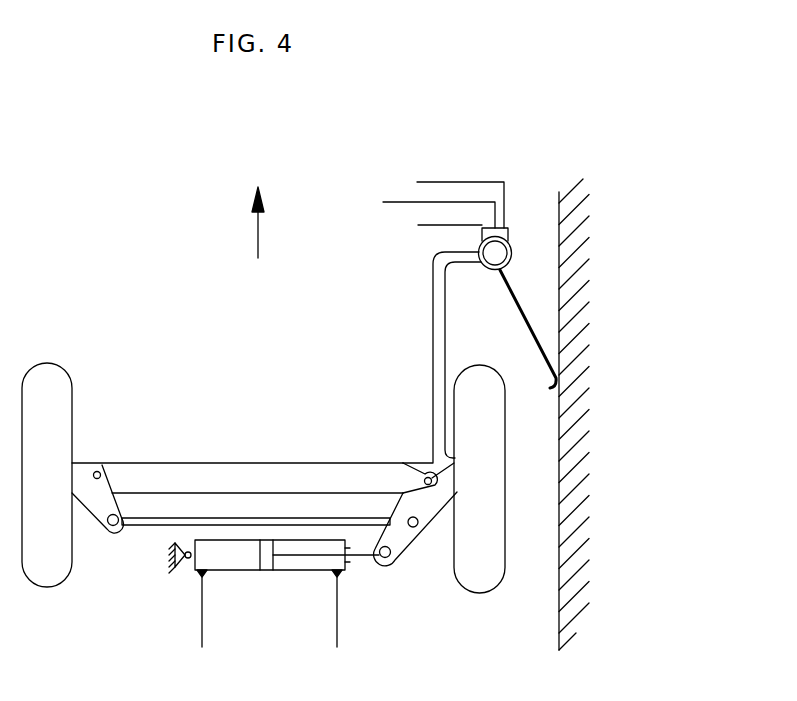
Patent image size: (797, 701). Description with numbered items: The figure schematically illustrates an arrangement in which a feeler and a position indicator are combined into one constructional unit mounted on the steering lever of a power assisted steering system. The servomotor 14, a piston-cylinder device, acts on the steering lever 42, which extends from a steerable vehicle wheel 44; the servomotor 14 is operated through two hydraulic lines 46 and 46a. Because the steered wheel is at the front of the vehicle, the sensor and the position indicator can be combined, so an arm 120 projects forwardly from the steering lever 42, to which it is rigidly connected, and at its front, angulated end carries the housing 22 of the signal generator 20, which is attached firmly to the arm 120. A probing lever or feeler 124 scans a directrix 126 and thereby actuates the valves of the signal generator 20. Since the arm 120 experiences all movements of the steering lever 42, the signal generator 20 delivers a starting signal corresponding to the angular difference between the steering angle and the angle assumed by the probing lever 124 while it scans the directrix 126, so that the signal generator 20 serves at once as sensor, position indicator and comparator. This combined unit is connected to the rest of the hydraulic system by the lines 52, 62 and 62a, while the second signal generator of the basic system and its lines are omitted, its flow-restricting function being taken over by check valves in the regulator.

The servomotor 14 is at (217, 557).
The signal generator 20 is at (495, 253).
The housing 22 is at (507, 230).
The steering lever 42 is at (396, 540).
The steerable vehicle wheel 44 is at (490, 562).
The hydraulic line 46 is at (202, 618).
The hydraulic line 46a is at (337, 620).
The line 52 is at (395, 202).
The line 62 is at (433, 228).
The line 62a is at (455, 182).
The arm 120 is at (436, 328).
The probing lever 124 is at (527, 318).
The directrix 126 is at (548, 576).